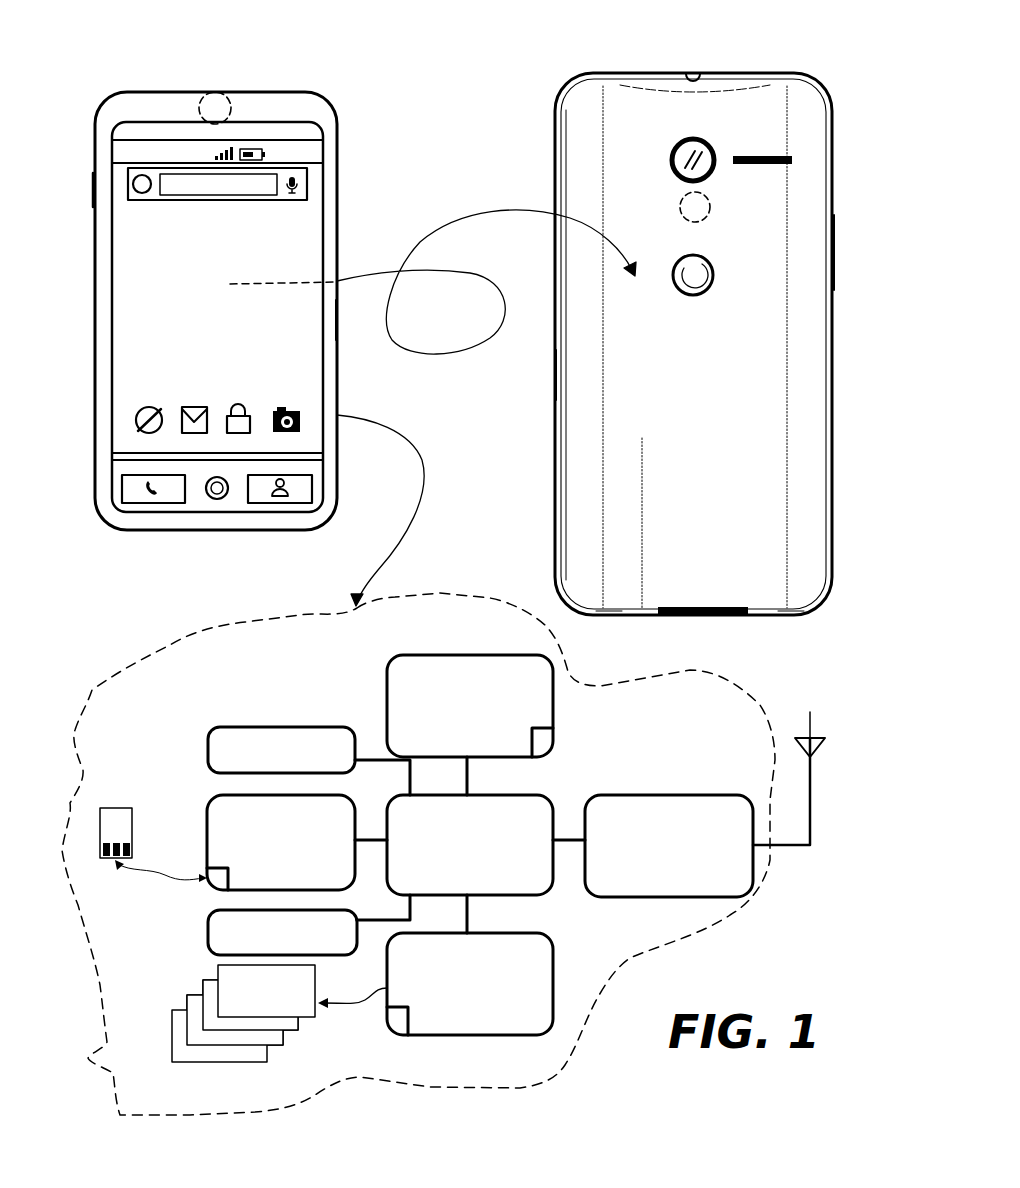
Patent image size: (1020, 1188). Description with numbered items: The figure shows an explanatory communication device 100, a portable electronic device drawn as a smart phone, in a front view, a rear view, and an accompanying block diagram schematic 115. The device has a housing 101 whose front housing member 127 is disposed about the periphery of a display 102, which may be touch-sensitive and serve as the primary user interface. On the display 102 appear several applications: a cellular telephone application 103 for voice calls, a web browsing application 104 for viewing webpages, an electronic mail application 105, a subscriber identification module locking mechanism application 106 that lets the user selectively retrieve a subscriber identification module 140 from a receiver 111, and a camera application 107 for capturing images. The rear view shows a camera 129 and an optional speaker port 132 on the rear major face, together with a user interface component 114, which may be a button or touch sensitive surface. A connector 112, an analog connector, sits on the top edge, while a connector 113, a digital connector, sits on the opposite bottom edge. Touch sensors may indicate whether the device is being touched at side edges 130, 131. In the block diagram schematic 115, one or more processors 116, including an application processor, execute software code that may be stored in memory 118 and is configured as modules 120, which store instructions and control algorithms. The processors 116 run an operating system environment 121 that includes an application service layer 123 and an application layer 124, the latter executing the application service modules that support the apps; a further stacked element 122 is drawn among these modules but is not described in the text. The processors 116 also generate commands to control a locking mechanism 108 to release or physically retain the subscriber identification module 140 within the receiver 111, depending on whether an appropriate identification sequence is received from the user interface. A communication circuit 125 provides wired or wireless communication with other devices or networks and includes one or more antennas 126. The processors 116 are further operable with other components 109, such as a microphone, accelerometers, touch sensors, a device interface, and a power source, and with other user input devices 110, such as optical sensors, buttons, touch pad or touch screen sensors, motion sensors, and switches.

The communication device 100 is at (354, 177).
The housing 101 is at (297, 92).
The display 102 is at (153, 322).
The cellular telephone application 103 is at (150, 505).
The web browsing application 104 is at (147, 407).
The electronic mail application 105 is at (195, 407).
The subscriber identification module locking mechanism application 106 is at (238, 405).
The camera application 107 is at (287, 408).
The locking mechanism 108 is at (207, 931).
The other components 109 is at (255, 726).
The other user input devices 110 is at (385, 695).
The receiver 111 is at (207, 826).
The connector 112 is at (693, 72).
The connector 113 is at (708, 617).
The user interface component 114 is at (711, 288).
The block diagram schematic 115 is at (772, 712).
The one or more processors 116 is at (555, 800).
The memory 118 is at (553, 976).
The modules 120 is at (168, 988).
The operating system environment 121 is at (316, 1017).
The front camera / second data file 122 is at (215, 105).
The application service layer 123 is at (710, 205).
The application layer 124 is at (207, 1062).
The communication circuit 125 is at (655, 794).
The antennas 126 is at (810, 712).
The front housing member 127 is at (337, 235).
The camera 129 is at (672, 153).
The side edge 130 is at (95, 401).
The side edge 131 is at (337, 338).
The speaker port 132 is at (736, 157).
The subscriber identification module 140 is at (113, 807).